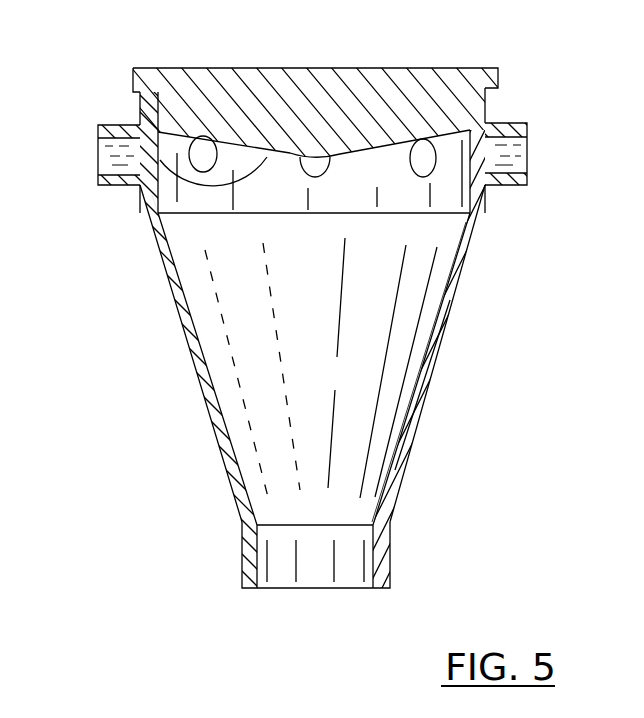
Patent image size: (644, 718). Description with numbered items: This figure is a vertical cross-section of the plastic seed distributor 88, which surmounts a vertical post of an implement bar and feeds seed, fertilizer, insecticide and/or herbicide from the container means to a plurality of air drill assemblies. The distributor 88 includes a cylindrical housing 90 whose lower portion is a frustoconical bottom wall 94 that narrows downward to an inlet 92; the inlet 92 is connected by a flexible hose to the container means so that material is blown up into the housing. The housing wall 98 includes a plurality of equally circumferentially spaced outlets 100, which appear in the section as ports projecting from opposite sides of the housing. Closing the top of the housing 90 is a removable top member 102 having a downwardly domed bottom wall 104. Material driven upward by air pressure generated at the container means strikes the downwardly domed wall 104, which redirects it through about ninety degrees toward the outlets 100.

The seed distributor 88 is at (322, 349).
The cylindrical housing 90 is at (482, 232).
The inlet 92 is at (390, 568).
The frustoconical bottom wall 94 is at (408, 467).
The housing wall 98 is at (145, 192).
The outlets 100 is at (120, 167).
The removable top member 102 is at (395, 68).
The downwardly domed bottom wall 104 is at (148, 146).